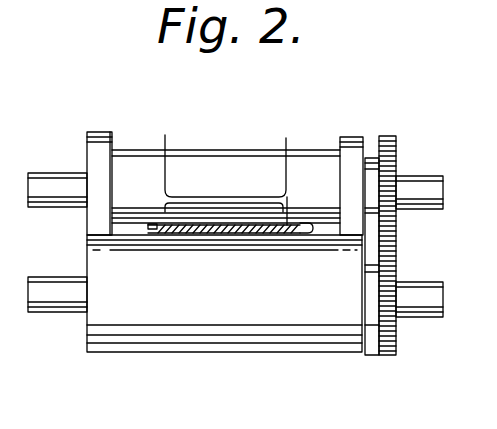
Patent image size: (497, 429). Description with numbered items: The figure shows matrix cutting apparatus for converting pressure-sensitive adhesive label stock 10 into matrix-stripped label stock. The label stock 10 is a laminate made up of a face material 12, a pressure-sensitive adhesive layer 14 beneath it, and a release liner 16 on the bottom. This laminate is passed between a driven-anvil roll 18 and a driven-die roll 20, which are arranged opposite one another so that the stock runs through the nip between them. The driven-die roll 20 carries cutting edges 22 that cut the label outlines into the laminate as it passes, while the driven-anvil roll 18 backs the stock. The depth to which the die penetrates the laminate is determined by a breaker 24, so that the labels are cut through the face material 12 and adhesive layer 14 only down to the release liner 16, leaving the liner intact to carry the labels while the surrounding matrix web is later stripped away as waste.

The pressure-sensitive adhesive label stock 10 is at (292, 218).
The face material 12 is at (153, 226).
The pressure-sensitive adhesive layer 14 is at (316, 236).
The release liner 16 is at (173, 236).
The driven-anvil roll 18 is at (190, 333).
The driven-die roll 20 is at (303, 163).
The cutting edges 22 is at (167, 140).
The breaker 24 is at (352, 143).